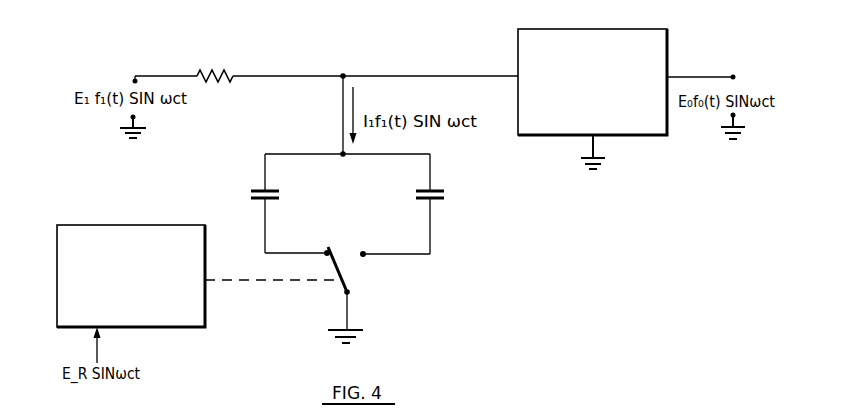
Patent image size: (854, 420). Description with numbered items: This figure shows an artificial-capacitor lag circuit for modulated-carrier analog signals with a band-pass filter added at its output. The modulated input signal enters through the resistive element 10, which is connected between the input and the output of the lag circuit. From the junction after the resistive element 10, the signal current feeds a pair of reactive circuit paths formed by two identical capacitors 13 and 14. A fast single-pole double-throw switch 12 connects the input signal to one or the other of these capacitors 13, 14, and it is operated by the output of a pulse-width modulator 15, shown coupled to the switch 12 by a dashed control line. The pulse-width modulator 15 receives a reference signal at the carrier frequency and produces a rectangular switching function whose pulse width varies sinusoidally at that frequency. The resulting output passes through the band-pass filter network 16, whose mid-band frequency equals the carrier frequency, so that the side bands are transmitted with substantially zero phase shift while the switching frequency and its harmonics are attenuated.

The resistive element 10 is at (215, 70).
The fast single-pole double-throw switch 12 is at (342, 270).
The capacitor 13 is at (272, 203).
The capacitor 14 is at (435, 203).
The pulse-width modulator 15 is at (164, 223).
The band-pass filter network 16 is at (577, 28).